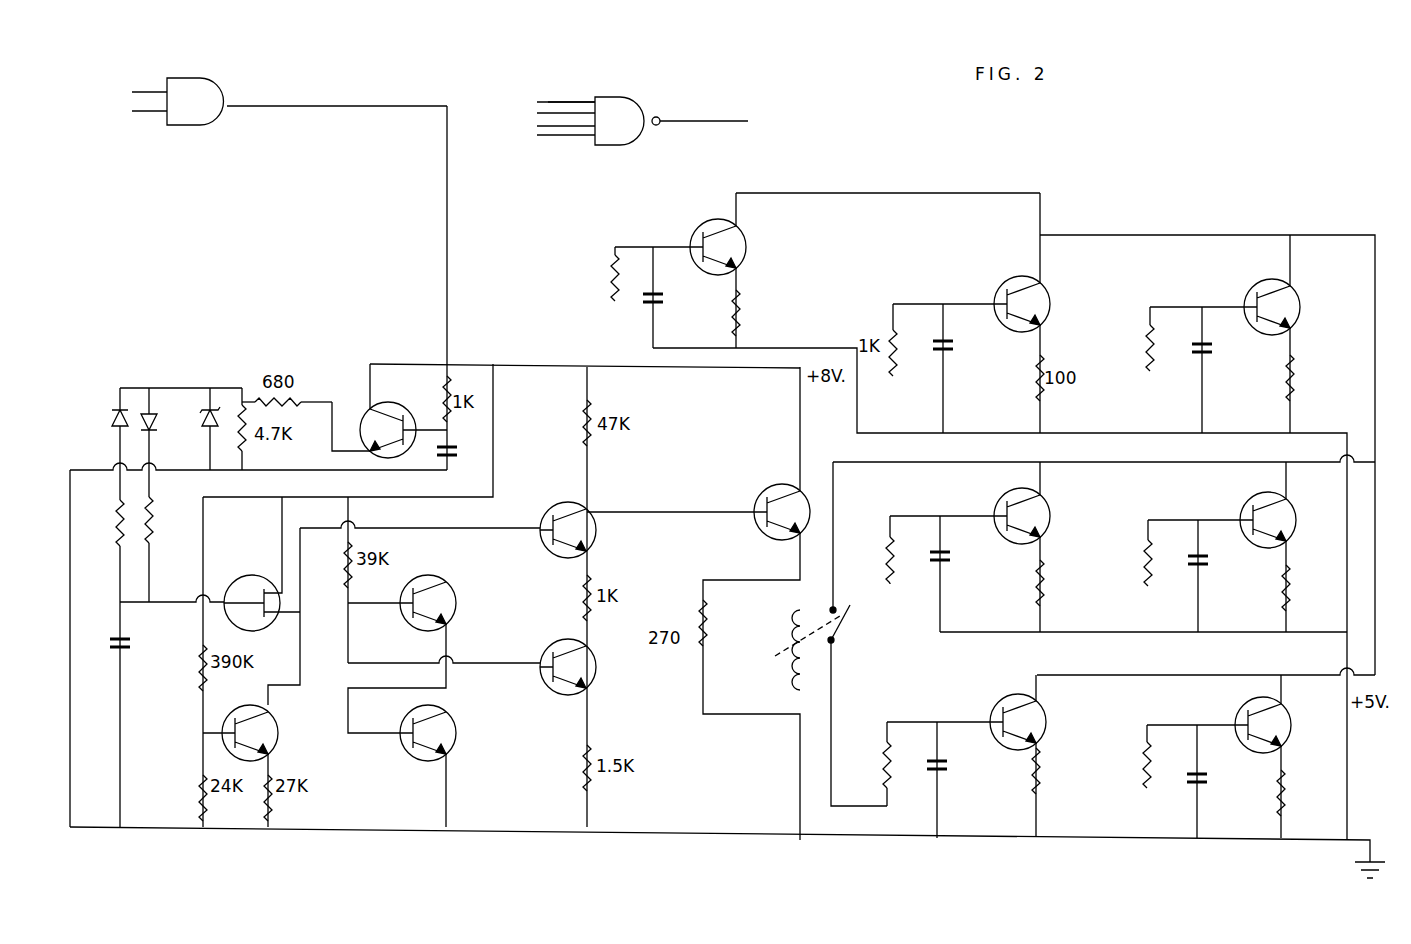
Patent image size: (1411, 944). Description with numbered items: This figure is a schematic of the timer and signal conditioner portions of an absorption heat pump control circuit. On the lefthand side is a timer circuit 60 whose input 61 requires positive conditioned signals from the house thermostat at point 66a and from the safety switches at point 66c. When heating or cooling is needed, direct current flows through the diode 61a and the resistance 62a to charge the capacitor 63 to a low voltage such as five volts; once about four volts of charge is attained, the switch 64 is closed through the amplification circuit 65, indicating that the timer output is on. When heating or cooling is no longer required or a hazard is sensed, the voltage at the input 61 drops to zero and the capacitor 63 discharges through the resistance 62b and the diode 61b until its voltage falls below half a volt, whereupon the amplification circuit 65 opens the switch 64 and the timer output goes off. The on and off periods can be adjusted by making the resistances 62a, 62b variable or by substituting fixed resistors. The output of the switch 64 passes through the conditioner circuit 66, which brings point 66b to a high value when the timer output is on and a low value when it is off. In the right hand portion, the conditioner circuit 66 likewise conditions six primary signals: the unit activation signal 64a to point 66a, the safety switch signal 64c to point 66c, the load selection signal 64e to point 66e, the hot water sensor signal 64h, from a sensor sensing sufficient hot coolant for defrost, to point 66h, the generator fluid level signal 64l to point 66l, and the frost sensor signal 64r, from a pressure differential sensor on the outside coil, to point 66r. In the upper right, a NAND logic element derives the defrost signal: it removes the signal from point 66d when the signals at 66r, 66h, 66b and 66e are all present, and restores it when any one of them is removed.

The timer circuit 60 is at (455, 360).
The input 61 is at (447, 153).
The diode 61a is at (155, 430).
The diode 61b is at (113, 420).
The resistance 62a is at (150, 522).
The resistance 62b is at (118, 522).
The capacitor 63 is at (126, 652).
The switch 64 is at (846, 626).
The unit activation signal 64a is at (892, 573).
The safety switches signal 64c is at (1148, 362).
The load selection signal 64e is at (892, 366).
The hot water sensor signal 64h is at (1148, 578).
The generator fluid sensor signal 64l is at (1141, 780).
The frost sensor signal 64r is at (610, 289).
The amplification circuit 65 is at (521, 789).
The conditioner circuit 66 is at (1104, 630).
The point 66a is at (1064, 537).
The point 66b is at (537, 113).
The point 66c is at (1312, 330).
The point 66d is at (661, 121).
The point 66e is at (552, 135).
The point 66h is at (537, 126).
The point 66l is at (1290, 745).
The point 66r is at (557, 102).